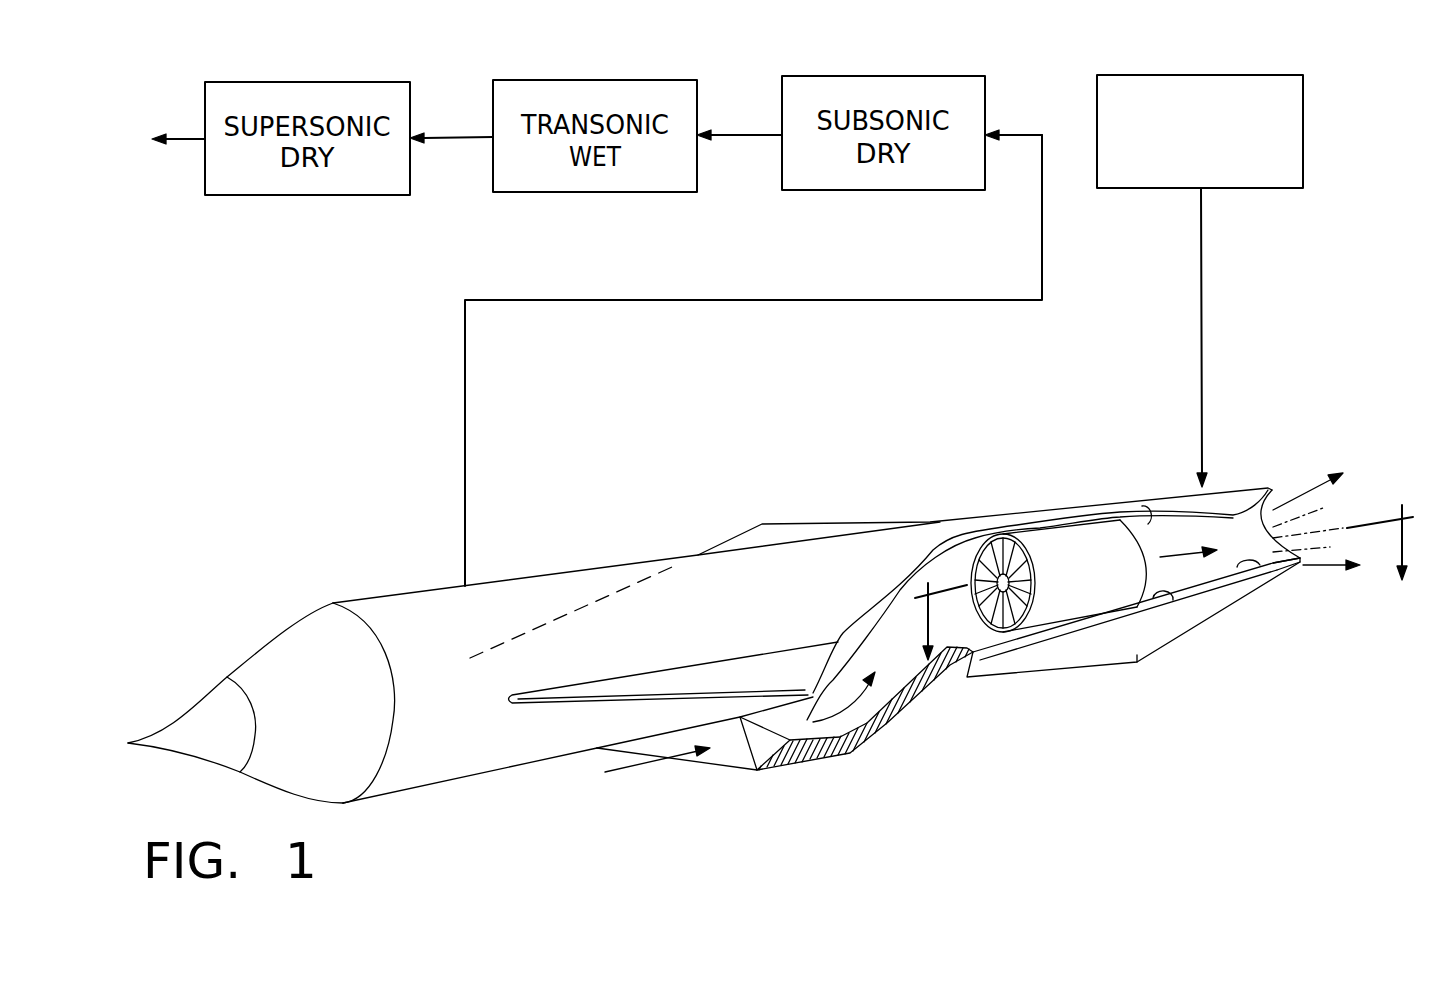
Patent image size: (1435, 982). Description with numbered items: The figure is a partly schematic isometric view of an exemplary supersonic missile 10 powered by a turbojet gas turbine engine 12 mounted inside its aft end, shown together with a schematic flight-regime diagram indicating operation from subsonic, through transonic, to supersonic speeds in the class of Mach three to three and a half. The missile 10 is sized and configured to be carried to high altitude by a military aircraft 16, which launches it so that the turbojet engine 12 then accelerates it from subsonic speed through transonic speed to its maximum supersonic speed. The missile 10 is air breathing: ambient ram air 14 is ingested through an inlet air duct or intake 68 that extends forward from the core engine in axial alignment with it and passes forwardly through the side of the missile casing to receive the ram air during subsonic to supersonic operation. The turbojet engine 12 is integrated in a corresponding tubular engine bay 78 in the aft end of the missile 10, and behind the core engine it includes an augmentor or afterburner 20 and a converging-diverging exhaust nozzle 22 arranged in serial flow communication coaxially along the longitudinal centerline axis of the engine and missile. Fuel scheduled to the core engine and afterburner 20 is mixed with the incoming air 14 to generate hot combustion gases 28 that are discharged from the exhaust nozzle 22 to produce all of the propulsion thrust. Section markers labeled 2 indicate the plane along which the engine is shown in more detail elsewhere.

The supersonic missile 10 is at (612, 560).
The turbojet gas turbine engine 12 is at (1062, 635).
The ambient ram air 14 is at (637, 770).
The military aircraft 16 is at (1148, 75).
The afterburner 20 is at (1187, 593).
The converging-diverging exhaust nozzle 22 is at (1300, 565).
The hot combustion gases 28 is at (1297, 495).
The inlet air duct 68 is at (730, 770).
The tubular engine bay 78 is at (1147, 518).
The section line for FIG. 2 is at (1155, 593).